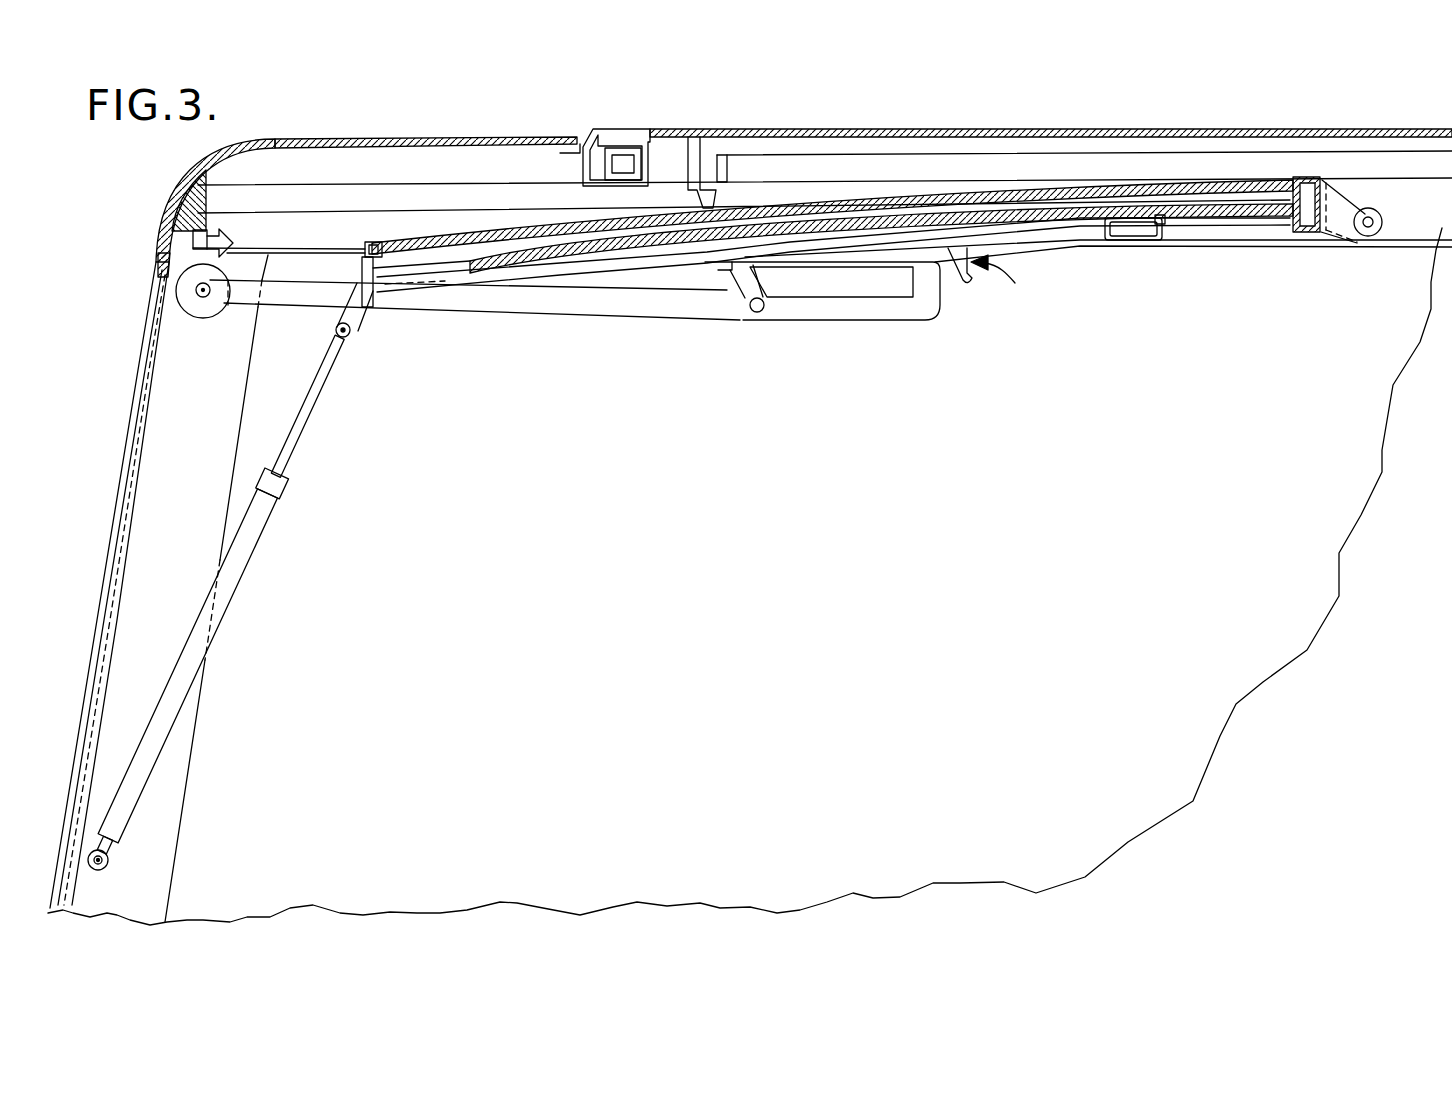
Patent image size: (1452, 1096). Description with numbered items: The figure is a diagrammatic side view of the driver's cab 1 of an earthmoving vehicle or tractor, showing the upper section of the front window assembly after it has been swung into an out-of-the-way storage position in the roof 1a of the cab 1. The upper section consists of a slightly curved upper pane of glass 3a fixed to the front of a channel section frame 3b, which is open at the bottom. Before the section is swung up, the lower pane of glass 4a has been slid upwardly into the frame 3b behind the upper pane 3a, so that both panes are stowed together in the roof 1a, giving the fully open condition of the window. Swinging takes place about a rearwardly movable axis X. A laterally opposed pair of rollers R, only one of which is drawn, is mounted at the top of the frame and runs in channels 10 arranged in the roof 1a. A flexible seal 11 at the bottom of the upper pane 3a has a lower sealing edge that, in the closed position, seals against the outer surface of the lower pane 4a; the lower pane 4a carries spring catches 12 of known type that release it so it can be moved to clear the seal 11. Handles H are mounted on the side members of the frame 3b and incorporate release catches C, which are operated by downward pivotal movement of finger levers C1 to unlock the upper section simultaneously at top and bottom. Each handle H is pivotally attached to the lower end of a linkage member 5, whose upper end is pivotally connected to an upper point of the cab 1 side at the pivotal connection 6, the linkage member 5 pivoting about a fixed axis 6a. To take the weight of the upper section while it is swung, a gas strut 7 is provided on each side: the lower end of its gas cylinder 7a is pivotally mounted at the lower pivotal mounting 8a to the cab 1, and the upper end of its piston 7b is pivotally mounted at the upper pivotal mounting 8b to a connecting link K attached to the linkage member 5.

The driver's cab 1 is at (121, 462).
The roof 1a is at (867, 163).
The upper pane of glass 3a is at (1027, 183).
The frame 3b is at (157, 538).
The lower pane of glass 4a is at (1230, 220).
The linkage member 5 is at (700, 306).
The pivotal connection 6 is at (193, 308).
The fixed axis 6a is at (200, 290).
The gas strut 7 is at (272, 618).
The gas cylinder 7a is at (133, 787).
The piston 7b is at (310, 412).
The lower pivotal mounting 8a is at (110, 862).
The upper pivotal mounting 8b is at (338, 329).
The channels 10 is at (1407, 230).
The flexible seal 11 is at (372, 242).
The spring catches 12 is at (1137, 241).
The release catches C is at (1005, 277).
The finger levers C1 is at (958, 280).
The handles H is at (867, 304).
The connecting link K is at (365, 297).
The rollers R is at (1366, 250).
The movable axis X is at (1368, 216).